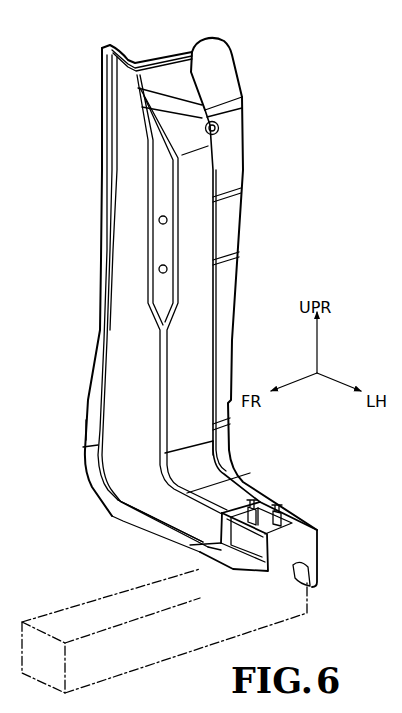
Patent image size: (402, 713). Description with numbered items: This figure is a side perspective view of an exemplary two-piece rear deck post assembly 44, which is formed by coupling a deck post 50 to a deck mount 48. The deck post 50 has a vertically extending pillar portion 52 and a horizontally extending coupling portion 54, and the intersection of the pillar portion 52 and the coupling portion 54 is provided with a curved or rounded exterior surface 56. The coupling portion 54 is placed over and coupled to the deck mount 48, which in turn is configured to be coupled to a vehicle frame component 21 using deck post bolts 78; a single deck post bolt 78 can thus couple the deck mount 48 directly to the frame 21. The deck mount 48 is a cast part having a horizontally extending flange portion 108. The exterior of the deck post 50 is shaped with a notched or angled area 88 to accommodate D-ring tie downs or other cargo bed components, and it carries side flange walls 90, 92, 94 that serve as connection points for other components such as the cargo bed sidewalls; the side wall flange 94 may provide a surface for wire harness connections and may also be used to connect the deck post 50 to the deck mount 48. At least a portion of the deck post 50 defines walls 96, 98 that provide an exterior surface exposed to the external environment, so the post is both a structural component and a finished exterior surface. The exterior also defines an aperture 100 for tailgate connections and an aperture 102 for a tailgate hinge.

The vehicle frame component 21 is at (308, 612).
The two-piece rear deck post assembly 44 is at (249, 75).
The deck mount 48 is at (323, 518).
The deck post 50 is at (88, 75).
The pillar portion 52 is at (114, 228).
The coupling portion 54 is at (140, 550).
The curved exterior surface 56 is at (208, 467).
The deck post bolt 78 is at (162, 183).
The notched or angled area 88 is at (157, 290).
The side flange wall 90 is at (235, 208).
The side flange wall 92 is at (93, 411).
The side wall flange 94 is at (133, 513).
The wall 96 is at (122, 338).
The wall 98 is at (195, 362).
The aperture for tailgate connections 100 is at (219, 140).
The aperture for a tailgate hinge 102 is at (225, 457).
The horizontally extending flange portion 108 is at (227, 562).